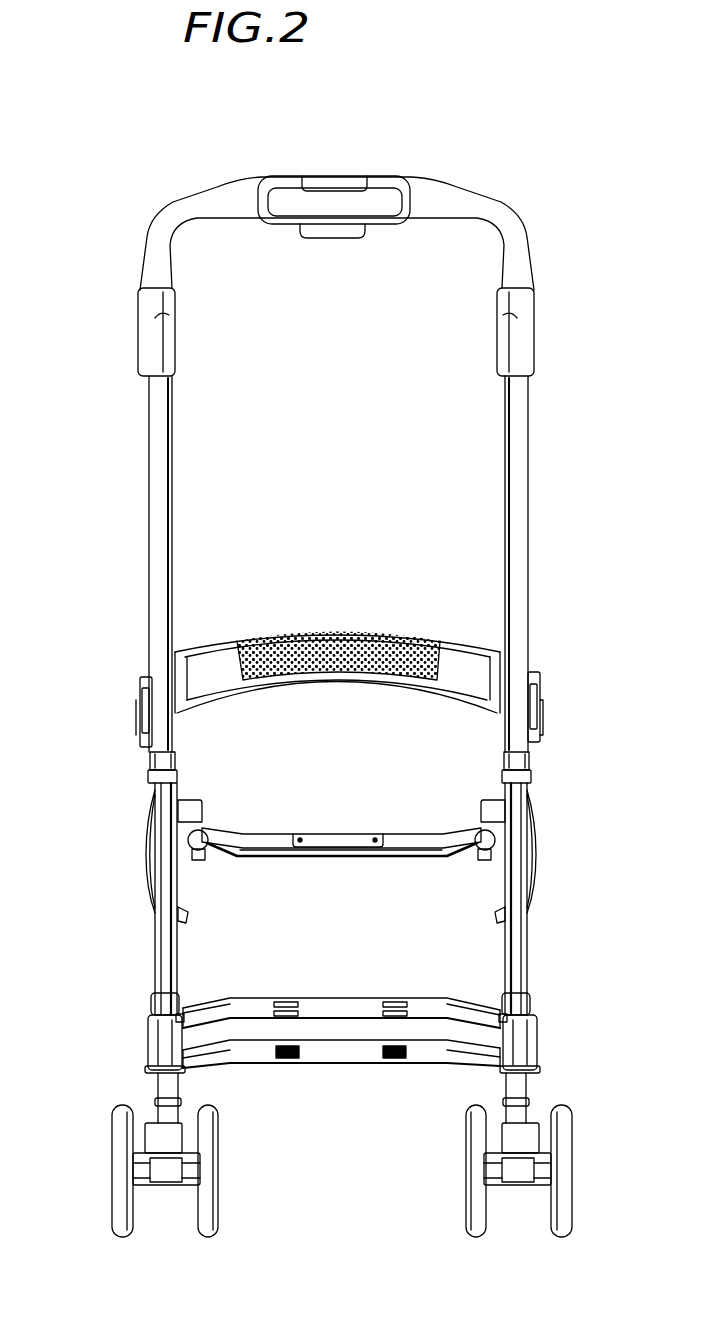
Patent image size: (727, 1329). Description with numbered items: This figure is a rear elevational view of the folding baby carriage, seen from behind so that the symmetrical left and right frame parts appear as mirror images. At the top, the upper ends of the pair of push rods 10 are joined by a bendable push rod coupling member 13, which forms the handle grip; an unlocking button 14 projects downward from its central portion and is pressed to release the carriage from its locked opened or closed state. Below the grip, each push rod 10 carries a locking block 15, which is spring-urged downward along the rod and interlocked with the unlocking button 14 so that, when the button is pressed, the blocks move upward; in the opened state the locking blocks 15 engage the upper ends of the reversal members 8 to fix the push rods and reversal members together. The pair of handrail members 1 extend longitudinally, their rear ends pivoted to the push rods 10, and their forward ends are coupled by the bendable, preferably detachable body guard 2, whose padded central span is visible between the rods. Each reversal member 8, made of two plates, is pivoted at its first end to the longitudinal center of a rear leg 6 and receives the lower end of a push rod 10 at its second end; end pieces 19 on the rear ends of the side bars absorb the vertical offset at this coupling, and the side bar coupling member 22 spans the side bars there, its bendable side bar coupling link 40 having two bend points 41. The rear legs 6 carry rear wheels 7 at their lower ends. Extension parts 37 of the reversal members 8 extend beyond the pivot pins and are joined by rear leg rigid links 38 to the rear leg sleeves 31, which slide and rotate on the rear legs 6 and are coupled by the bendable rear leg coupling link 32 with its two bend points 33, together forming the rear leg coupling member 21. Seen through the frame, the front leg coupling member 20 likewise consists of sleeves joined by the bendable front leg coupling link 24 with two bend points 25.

The handrail member 1 is at (148, 675).
The body guard 2 is at (281, 640).
The rear leg 6 is at (158, 940).
The rear wheel 7 is at (212, 1188).
The reversal member 8 is at (145, 850).
The push rod 10 is at (160, 497).
The push rod coupling member 13 is at (428, 196).
The unlocking button 14 is at (325, 240).
The locking block 15 is at (150, 775).
The end piece 19 is at (195, 812).
The front leg coupling member 20 is at (331, 997).
The rear leg coupling member 21 is at (350, 1068).
The side bar coupling member 22 is at (330, 829).
The front leg coupling link 24 is at (215, 1005).
The bend point 25 is at (286, 1002).
The rear leg sleeve 31 is at (155, 1046).
The rear leg coupling link 32 is at (430, 1064).
The bend point 33 is at (290, 1062).
The reversal member extension part 37 is at (189, 915).
The rear leg rigid link 38 is at (155, 997).
The side bar coupling link 40 is at (330, 858).
The bend point 41 is at (300, 838).